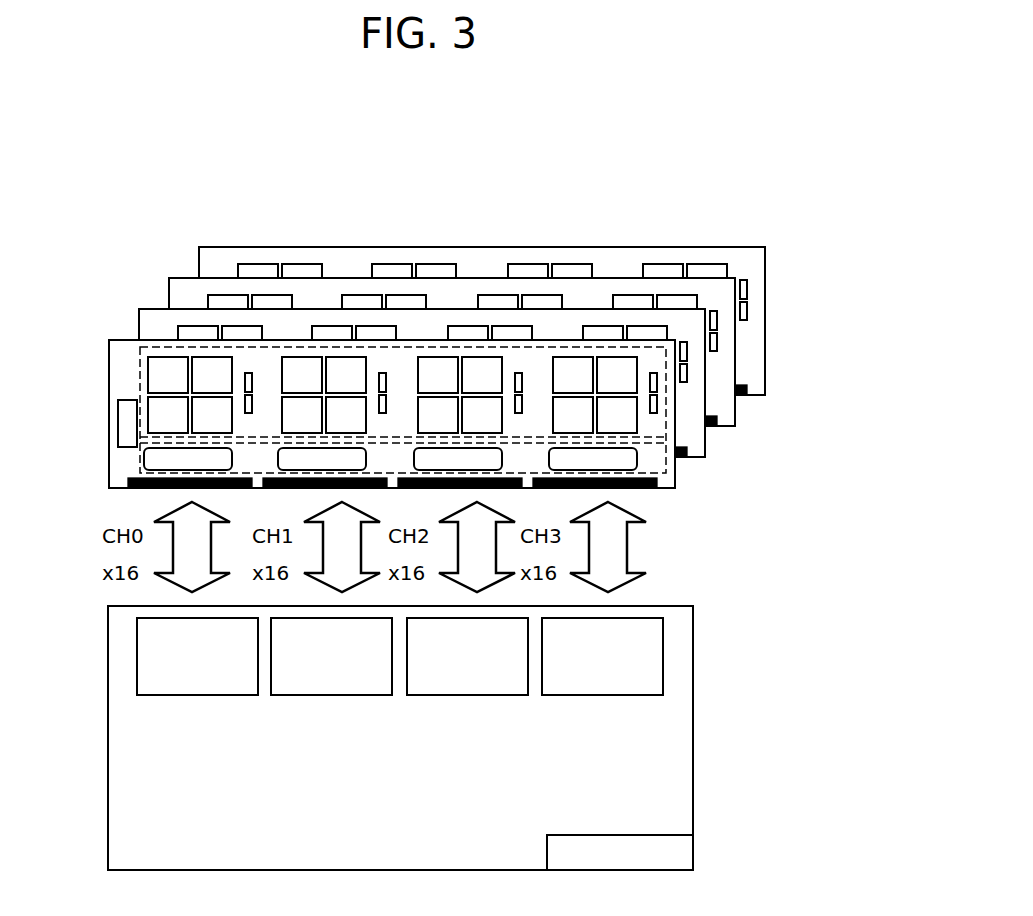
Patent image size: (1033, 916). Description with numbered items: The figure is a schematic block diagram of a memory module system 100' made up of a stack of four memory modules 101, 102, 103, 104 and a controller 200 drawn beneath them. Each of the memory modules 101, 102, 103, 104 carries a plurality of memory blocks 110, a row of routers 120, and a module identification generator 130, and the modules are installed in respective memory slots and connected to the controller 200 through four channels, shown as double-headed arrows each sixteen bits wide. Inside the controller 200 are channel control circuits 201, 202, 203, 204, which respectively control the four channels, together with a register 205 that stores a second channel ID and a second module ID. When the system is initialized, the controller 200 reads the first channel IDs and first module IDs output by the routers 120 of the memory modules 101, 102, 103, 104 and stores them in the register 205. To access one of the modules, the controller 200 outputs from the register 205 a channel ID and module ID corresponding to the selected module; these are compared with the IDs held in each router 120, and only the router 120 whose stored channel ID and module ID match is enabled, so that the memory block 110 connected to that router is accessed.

The memory module system 100' is at (846, 134).
The memory module 101 is at (386, 414).
The memory module 102 is at (707, 432).
The memory module 103 is at (735, 402).
The memory module 104 is at (765, 365).
The memory block 110 is at (140, 367).
The router 120 is at (140, 465).
The module identification generator 130 is at (118, 425).
The controller 200 is at (437, 738).
The channel control circuit 201 is at (197, 695).
The channel control circuit 202 is at (331, 695).
The channel control circuit 203 is at (467, 695).
The channel control circuit 204 is at (602, 695).
The register 205 is at (547, 850).